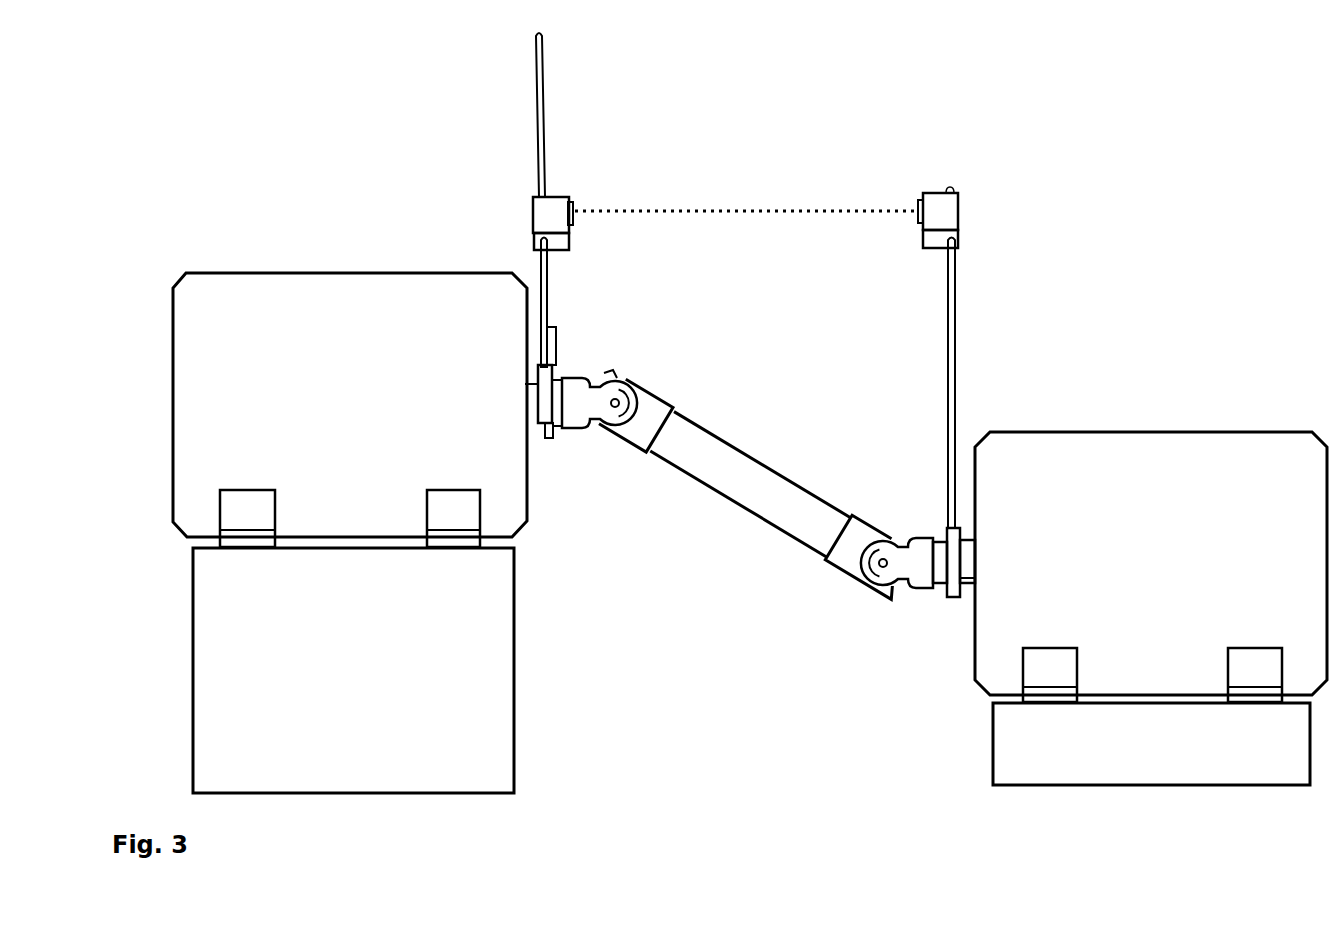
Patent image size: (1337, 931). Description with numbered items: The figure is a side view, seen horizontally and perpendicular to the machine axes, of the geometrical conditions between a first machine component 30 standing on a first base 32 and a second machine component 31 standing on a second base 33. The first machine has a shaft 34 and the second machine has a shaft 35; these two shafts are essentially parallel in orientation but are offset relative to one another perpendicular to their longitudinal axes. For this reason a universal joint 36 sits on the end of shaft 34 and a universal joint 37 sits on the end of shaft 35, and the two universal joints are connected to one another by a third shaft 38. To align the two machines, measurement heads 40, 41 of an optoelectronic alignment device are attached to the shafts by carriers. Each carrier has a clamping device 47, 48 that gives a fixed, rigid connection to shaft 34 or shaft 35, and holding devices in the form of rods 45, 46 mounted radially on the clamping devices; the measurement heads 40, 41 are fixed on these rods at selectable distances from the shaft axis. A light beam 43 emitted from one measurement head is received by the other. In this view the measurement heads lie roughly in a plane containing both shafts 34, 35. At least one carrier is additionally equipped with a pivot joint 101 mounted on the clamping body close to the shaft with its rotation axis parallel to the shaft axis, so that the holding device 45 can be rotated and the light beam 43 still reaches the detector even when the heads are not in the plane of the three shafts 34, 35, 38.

The first machine component 30 is at (340, 290).
The second machine component 31 is at (1237, 460).
The first base 32 is at (375, 764).
The second base 33 is at (1157, 755).
The shaft 34 is at (532, 415).
The shaft 35 is at (968, 560).
The universal joint 36 is at (593, 394).
The universal joint 37 is at (900, 560).
The third shaft 38 is at (780, 487).
The measurement head 40 is at (557, 203).
The measurement head 41 is at (947, 212).
The light beam 43 is at (723, 210).
The rod 45 is at (540, 165).
The rod 46 is at (958, 420).
The clamping device 47 is at (545, 407).
The clamping device 48 is at (950, 530).
The pivot joint 101 is at (550, 347).